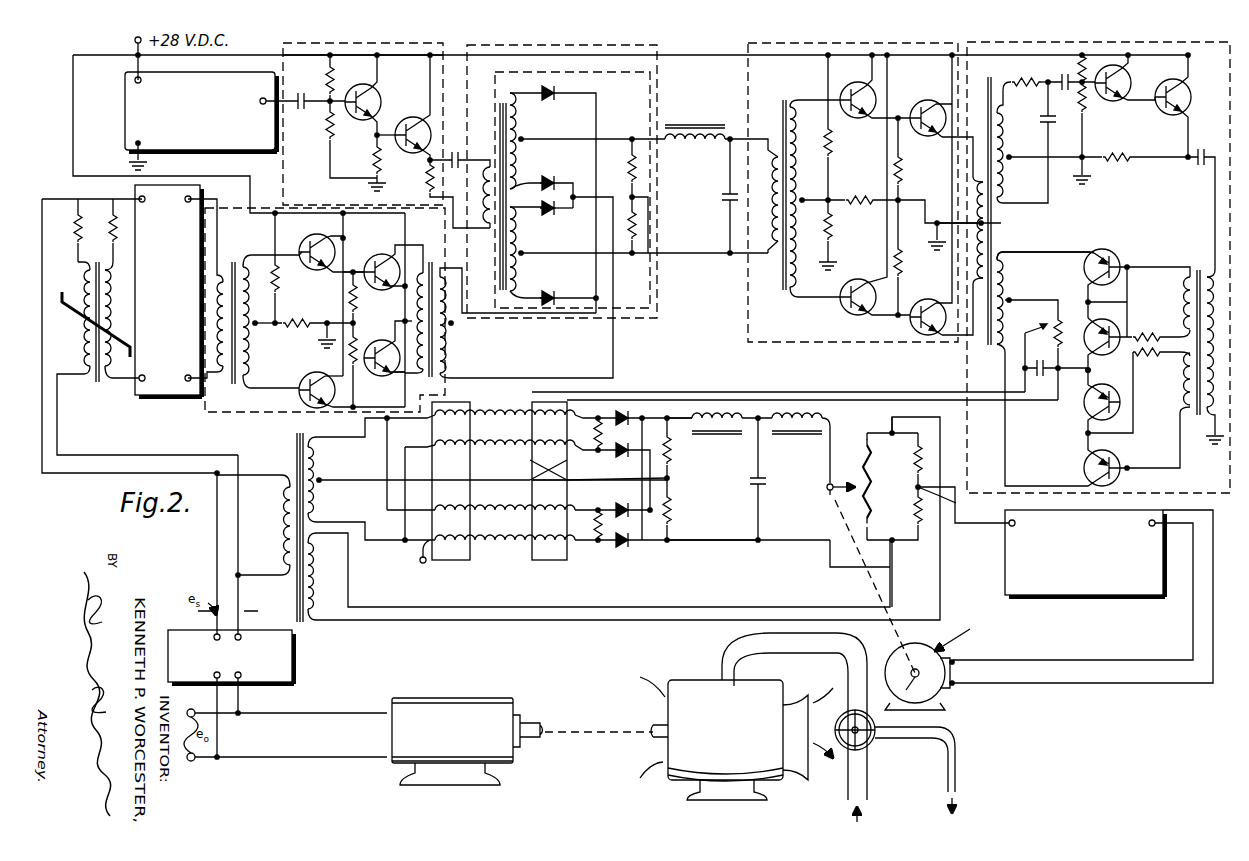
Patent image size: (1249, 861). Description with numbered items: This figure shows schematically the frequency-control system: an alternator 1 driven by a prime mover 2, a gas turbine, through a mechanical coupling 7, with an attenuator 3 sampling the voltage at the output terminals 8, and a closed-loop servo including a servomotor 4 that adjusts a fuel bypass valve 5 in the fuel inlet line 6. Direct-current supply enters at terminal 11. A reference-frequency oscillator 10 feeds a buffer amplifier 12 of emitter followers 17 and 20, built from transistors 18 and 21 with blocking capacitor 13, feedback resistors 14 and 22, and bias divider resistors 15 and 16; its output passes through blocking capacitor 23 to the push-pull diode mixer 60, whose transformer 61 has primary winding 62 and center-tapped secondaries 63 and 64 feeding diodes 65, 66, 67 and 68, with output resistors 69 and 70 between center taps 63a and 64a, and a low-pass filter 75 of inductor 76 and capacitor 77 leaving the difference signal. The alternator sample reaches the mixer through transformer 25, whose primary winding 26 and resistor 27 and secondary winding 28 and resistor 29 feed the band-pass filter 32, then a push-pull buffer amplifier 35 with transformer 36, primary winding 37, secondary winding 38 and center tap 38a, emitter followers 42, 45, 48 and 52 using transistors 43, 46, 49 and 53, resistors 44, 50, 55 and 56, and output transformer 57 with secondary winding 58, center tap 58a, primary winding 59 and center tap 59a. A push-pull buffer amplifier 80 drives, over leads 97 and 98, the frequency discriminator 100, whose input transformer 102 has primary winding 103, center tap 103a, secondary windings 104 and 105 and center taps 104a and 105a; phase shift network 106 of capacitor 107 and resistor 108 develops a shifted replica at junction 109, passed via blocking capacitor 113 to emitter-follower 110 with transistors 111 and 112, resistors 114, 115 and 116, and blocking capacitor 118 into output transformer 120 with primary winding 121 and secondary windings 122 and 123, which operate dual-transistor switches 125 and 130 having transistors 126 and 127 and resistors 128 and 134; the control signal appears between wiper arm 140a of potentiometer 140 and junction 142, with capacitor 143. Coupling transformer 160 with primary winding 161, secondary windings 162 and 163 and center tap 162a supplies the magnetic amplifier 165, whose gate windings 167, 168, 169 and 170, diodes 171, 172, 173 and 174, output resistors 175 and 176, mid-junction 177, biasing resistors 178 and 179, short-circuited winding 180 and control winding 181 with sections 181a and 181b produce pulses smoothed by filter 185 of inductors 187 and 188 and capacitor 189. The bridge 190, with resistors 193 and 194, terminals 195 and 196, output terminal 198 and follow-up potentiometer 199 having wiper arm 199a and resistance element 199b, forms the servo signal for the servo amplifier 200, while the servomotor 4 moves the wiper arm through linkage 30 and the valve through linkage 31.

The alternator 1 is at (456, 693).
The prime mover 2 is at (680, 669).
The attenuator 3 is at (296, 648).
The servomotor 4 is at (892, 649).
The fuel bypass valve 5 is at (876, 742).
The fuel inlet line 6 is at (866, 775).
The mechanical coupling 7 is at (587, 732).
The output terminals 8 is at (285, 732).
The reference-frequency oscillator 10 is at (232, 70).
The positive-voltage supply terminal 11 is at (134, 40).
The buffer amplifier 12 is at (418, 33).
The blocking capacitor 13 is at (309, 90).
The degenerative feedback resistor 14 is at (372, 161).
The resistor 15 is at (334, 76).
The resistor 16 is at (326, 126).
The first emitter follower 17 is at (371, 135).
The NPN transistor 18 is at (380, 78).
The second emitter follower 20 is at (363, 80).
The NPN transistor 21 is at (408, 109).
The degenerative feedback resistor 22 is at (425, 166).
The blocking capacitor 23 is at (458, 153).
The step-down transformer 25 is at (96, 331).
The primary winding 26 is at (80, 335).
The voltage-dropping resistor 27 is at (74, 218).
The secondary winding 28 is at (112, 264).
The current-limiting resistor 29 is at (112, 216).
The mechanical linkage 30 is at (870, 598).
The mechanical linkage 31 is at (917, 688).
The band-pass filter 32 is at (135, 388).
The push-pull buffer amplifier 35 is at (236, 412).
The coupling transformer 36 is at (233, 306).
The primary winding 37 is at (224, 384).
The center-tapped secondary winding 38 is at (258, 360).
The center tap 38a is at (262, 328).
The first emitter follower 42 is at (335, 282).
The NPN transistor 43 is at (318, 231).
The degenerative feedback resistor 44 is at (341, 297).
The second emitter follower 45 is at (391, 310).
The NPN transistor 46 is at (373, 253).
The third emitter follower 48 is at (337, 401).
The NPN transistor 49 is at (317, 374).
The degenerative feedback resistor 50 is at (355, 343).
The fourth emitter follower 52 is at (387, 386).
The NPN transistor 53 is at (394, 375).
The resistor 55 is at (279, 280).
The resistor 56 is at (305, 315).
The output transformer 57 is at (428, 307).
The center-tapped secondary winding 58 is at (454, 358).
The center tap 58a is at (451, 323).
The center-tapped primary winding 59 is at (408, 302).
The center tap 59a is at (404, 318).
The push-pull diode mixer 60 is at (566, 33).
The transformer 61 is at (565, 190).
The primary winding 62 is at (476, 181).
The secondary winding 63 is at (521, 123).
The center tap 63a is at (526, 141).
The secondary winding 64 is at (521, 266).
The center tap 64a is at (525, 251).
The semiconductor diode 65 is at (554, 85).
The semiconductor diode 66 is at (554, 175).
The semiconductor diode 67 is at (554, 211).
The semiconductor diode 68 is at (550, 296).
The resistor 69 is at (628, 172).
The resistor 70 is at (643, 230).
The low-pass filter 75 is at (735, 212).
The inductor 76 is at (700, 149).
The capacitor 77 is at (724, 202).
The push-pull buffer amplifier 80 is at (822, 31).
The output lead 97 is at (988, 126).
The output lead 98 is at (964, 345).
The frequency discriminator 100 is at (1099, 31).
The input transformer 102 is at (986, 211).
The center-tapped primary winding 103 is at (1002, 180).
The center tap 103a is at (1000, 223).
The first secondary winding 104 is at (1008, 177).
The center tap 104a is at (1012, 156).
The second secondary winding 105 is at (1006, 271).
The center tap 105a is at (1030, 290).
The phase shift network 106 is at (1027, 94).
The capacitor 107 is at (1050, 124).
The resistor 108 is at (1021, 76).
The junction 109 is at (1063, 79).
The two-stage emitter-follower 110 is at (1113, 154).
The NPN transistor 111 is at (1138, 63).
The NPN transistor 112 is at (1186, 85).
The blocking capacitor 113 is at (1066, 96).
The resistor 114 is at (1087, 59).
The resistor 115 is at (1087, 104).
The degenerative feedback resistor 116 is at (1117, 160).
The blocking capacitor 118 is at (1200, 154).
The output transformer 120 is at (1193, 329).
The primary winding 121 is at (1210, 430).
The first secondary winding 122 is at (1182, 273).
The second secondary winding 123 is at (1182, 397).
The dual-transistor switch 125 is at (1046, 269).
The NPN transistor 126 is at (1112, 255).
The NPN transistor 127 is at (1085, 357).
The current-limiting resistor 128 is at (1160, 319).
The dual-transistor switch 130 is at (1093, 415).
The current-limiting resistor 134 is at (1138, 352).
The potentiometer 140 is at (1046, 316).
The wiper arm 140a is at (1040, 358).
The junction 142 is at (1085, 368).
The capacitor 143 is at (1054, 380).
The coupling transformer 160 is at (280, 527).
The primary winding 161 is at (278, 509).
The first secondary winding 162 is at (322, 461).
The center tap 162a is at (322, 480).
The second secondary winding 163 is at (340, 565).
The magnetic amplifier 165 is at (474, 493).
The gate winding 167 is at (516, 409).
The gate winding 168 is at (516, 459).
The gate winding 169 is at (516, 507).
The gate winding 170 is at (474, 550).
The semiconductor diode 171 is at (628, 413).
The semiconductor diode 172 is at (619, 455).
The semiconductor diode 173 is at (622, 505).
The semiconductor diode 174 is at (703, 550).
The output resistor 175 is at (670, 452).
The output resistor 176 is at (669, 510).
The mid-junction 177 is at (632, 478).
The biasing resistor 178 is at (586, 434).
The biasing resistor 179 is at (618, 544).
The short-circuited winding 180 is at (421, 557).
The control winding 181 is at (566, 558).
The first section 181a is at (565, 454).
The second section 181b is at (549, 520).
The inductance-capacitance filter 185 is at (699, 452).
The inductor 187 is at (695, 431).
The inductor 188 is at (775, 431).
The capacitor 189 is at (762, 482).
The bridge 190 is at (943, 500).
The resistor 193 is at (911, 458).
The resistor 194 is at (911, 531).
The input terminal 195 is at (892, 431).
The input terminal 196 is at (892, 540).
The bridge output terminal 198 is at (950, 501).
The follow-up potentiometer 199 is at (854, 471).
The wiper arm 199a is at (826, 489).
The resistance element 199b is at (834, 525).
The servo amplifier 200 is at (1163, 510).